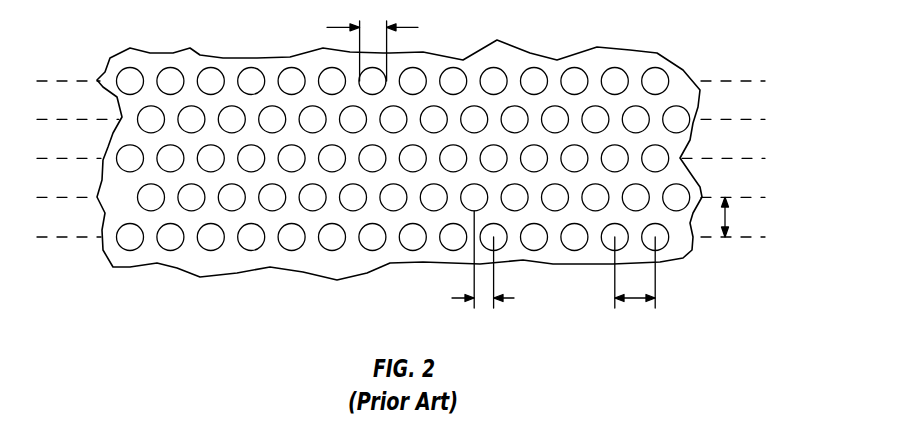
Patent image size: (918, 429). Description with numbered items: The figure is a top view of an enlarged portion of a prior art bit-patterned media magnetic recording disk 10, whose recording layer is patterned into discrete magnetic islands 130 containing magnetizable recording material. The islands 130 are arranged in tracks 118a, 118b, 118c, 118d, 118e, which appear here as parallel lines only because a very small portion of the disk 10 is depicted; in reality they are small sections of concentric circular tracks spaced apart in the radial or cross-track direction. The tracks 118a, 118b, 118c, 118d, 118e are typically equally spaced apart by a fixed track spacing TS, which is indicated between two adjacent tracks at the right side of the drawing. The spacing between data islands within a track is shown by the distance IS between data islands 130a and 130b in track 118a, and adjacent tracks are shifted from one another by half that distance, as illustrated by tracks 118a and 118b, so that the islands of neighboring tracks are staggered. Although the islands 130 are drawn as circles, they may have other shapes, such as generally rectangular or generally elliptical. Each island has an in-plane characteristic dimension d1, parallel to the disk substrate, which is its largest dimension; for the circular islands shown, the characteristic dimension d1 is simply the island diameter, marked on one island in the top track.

The prior art disk 10 is at (194, 284).
The discrete magnetic islands 130 is at (290, 68).
The data island 130a is at (609, 240).
The data island 130b is at (660, 240).
The track 118a is at (740, 237).
The track 118b is at (740, 197).
The track 118c is at (740, 158).
The track 118d is at (740, 119).
The track 118e is at (740, 81).
The characteristic dimension d1 is at (372, 40).
The island spacing IS is at (635, 272).
The track spacing TS is at (716, 217).